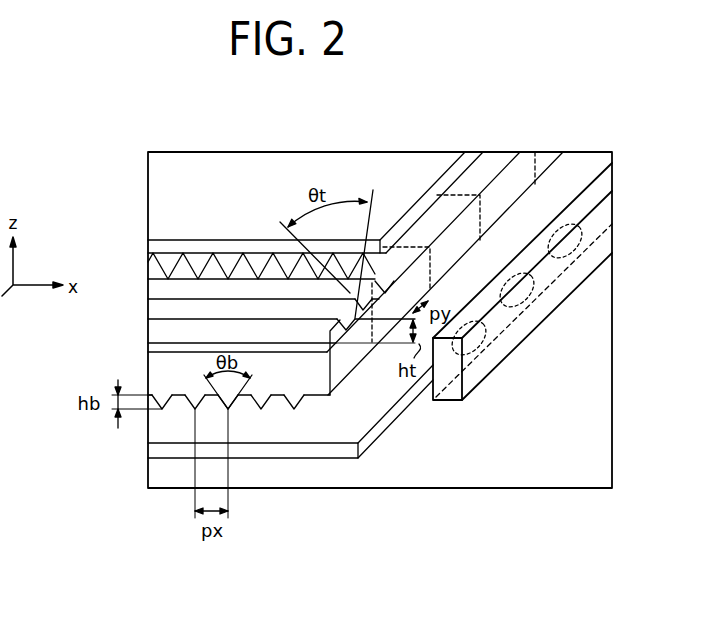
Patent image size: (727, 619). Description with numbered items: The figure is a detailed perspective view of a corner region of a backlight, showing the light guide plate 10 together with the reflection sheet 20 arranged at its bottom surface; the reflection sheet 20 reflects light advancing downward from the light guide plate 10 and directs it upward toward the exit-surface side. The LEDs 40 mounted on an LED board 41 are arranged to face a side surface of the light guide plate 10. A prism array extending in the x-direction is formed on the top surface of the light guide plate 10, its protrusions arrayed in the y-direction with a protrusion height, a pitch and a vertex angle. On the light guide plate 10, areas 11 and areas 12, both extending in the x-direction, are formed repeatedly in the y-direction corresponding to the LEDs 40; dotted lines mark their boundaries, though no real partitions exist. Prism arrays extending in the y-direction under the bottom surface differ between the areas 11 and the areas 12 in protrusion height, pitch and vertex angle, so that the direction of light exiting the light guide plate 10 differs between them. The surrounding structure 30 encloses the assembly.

The light guide plate 10 is at (493, 162).
The areas 11 is at (343, 367).
The areas 12 is at (387, 289).
The reflection sheet 20 is at (388, 415).
The frame 30 is at (400, 162).
The LEDs 40 is at (476, 341).
The LED board 41 is at (537, 313).